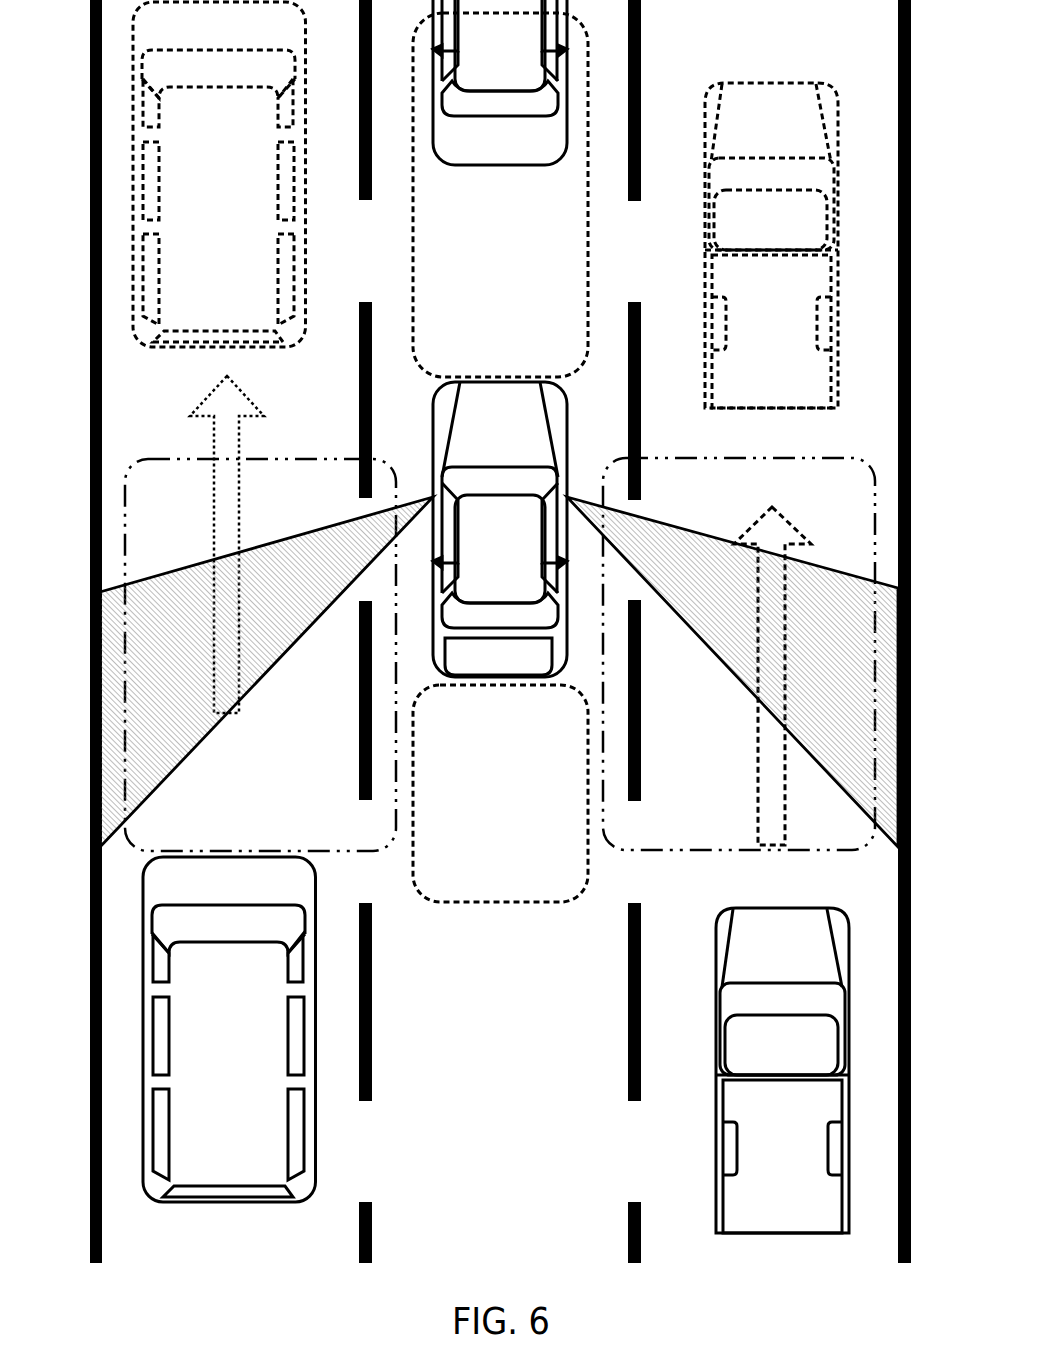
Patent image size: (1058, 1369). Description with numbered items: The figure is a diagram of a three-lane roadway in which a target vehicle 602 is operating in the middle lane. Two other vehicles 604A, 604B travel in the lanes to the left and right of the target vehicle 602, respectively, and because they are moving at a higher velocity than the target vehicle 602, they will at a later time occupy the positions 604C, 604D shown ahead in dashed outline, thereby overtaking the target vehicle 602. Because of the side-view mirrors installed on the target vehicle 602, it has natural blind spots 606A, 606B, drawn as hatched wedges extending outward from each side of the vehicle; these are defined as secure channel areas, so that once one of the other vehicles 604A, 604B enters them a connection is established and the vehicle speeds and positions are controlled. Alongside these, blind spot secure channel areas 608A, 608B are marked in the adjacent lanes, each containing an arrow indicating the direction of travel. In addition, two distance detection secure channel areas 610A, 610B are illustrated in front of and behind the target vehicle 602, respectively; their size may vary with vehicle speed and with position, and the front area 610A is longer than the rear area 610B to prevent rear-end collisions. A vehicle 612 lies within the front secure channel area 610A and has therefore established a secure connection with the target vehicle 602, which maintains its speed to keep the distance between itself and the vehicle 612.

The target vehicle 602 is at (433, 450).
The other vehicle 604A is at (228, 1203).
The other vehicle 604B is at (762, 1233).
The later position of other vehicle 604C is at (307, 205).
The later position of other vehicle 604D is at (707, 222).
The natural blind spot 606A is at (214, 727).
The natural blind spot 606B is at (734, 677).
The blind spot secure channel area 608A is at (158, 459).
The blind spot secure channel area 608B is at (890, 428).
The distance detection secure channel area 610A is at (587, 218).
The distance detection secure channel area 610B is at (587, 783).
The vehicle 612 is at (467, 167).